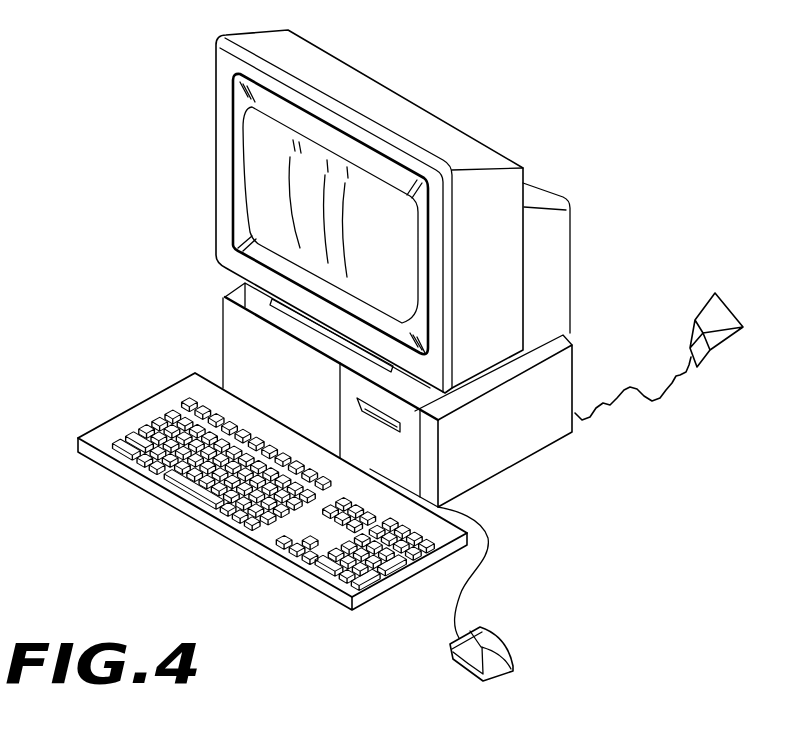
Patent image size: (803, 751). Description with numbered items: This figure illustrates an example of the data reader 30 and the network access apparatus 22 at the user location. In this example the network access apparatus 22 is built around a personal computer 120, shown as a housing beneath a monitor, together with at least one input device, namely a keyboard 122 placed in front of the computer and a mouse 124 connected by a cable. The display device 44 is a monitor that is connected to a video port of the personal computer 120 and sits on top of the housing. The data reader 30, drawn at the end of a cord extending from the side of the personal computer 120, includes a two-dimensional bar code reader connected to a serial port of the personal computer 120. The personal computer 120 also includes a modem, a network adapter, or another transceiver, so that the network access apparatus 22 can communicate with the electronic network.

The network access apparatus 22 is at (183, 271).
The display device 44 is at (216, 136).
The personal computer 120 is at (223, 343).
The keyboard 122 is at (137, 405).
The mouse 124 is at (507, 645).
The data reader 30 is at (697, 320).